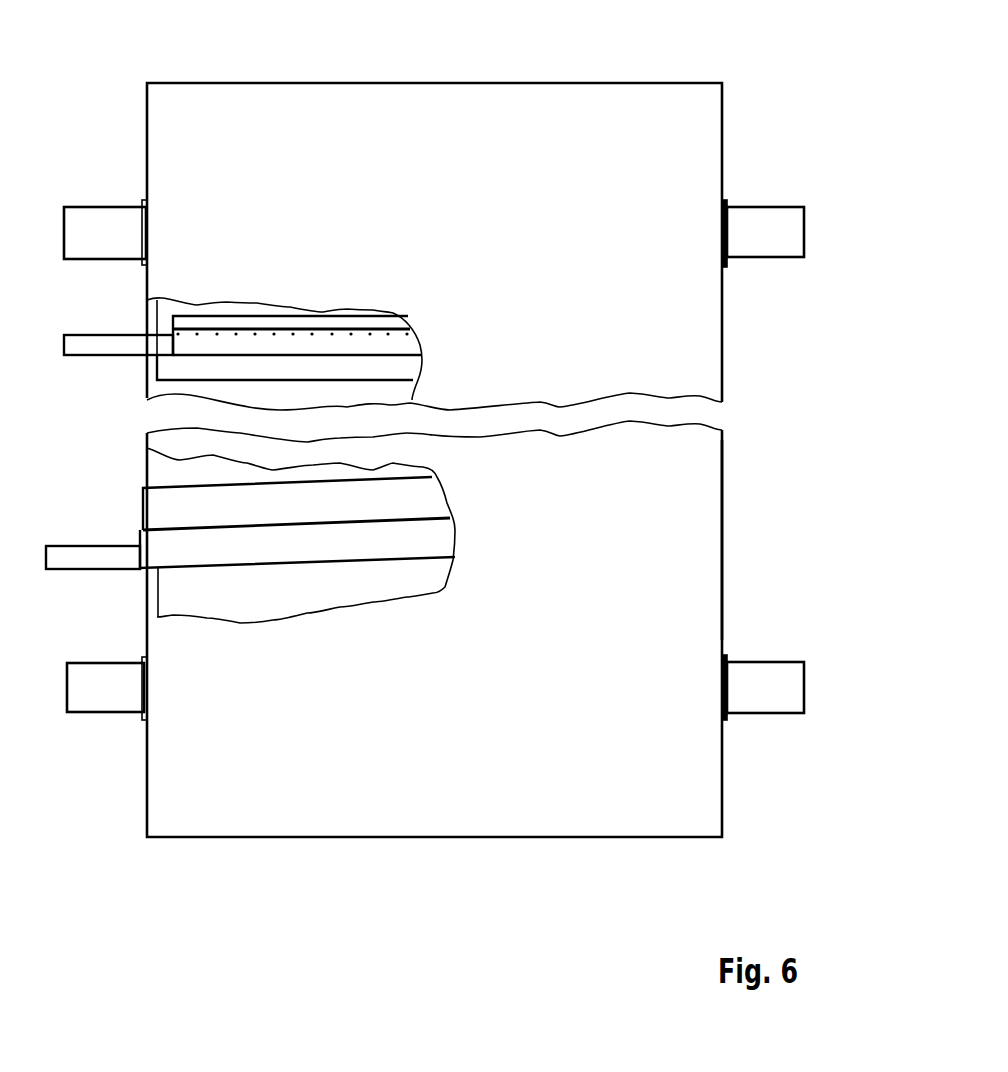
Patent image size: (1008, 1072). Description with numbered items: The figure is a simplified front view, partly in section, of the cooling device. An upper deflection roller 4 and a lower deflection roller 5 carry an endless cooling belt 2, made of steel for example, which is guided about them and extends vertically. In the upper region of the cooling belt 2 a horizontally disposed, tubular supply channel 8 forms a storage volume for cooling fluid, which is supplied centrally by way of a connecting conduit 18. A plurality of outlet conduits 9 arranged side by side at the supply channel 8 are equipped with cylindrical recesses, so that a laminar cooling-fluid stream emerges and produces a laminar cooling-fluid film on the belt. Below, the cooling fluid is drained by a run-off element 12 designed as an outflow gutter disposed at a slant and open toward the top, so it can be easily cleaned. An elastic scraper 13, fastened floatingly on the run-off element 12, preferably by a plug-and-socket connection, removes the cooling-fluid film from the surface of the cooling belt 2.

The cooling belt 2 is at (708, 480).
The upper deflection roller 4 is at (688, 72).
The lower deflection roller 5 is at (553, 850).
The tubular supply channel 8 is at (183, 343).
The outlet conduits 9 is at (213, 330).
The run-off element 12 is at (153, 553).
The elastic scraper 13 is at (162, 510).
The connecting conduit 18 is at (90, 335).